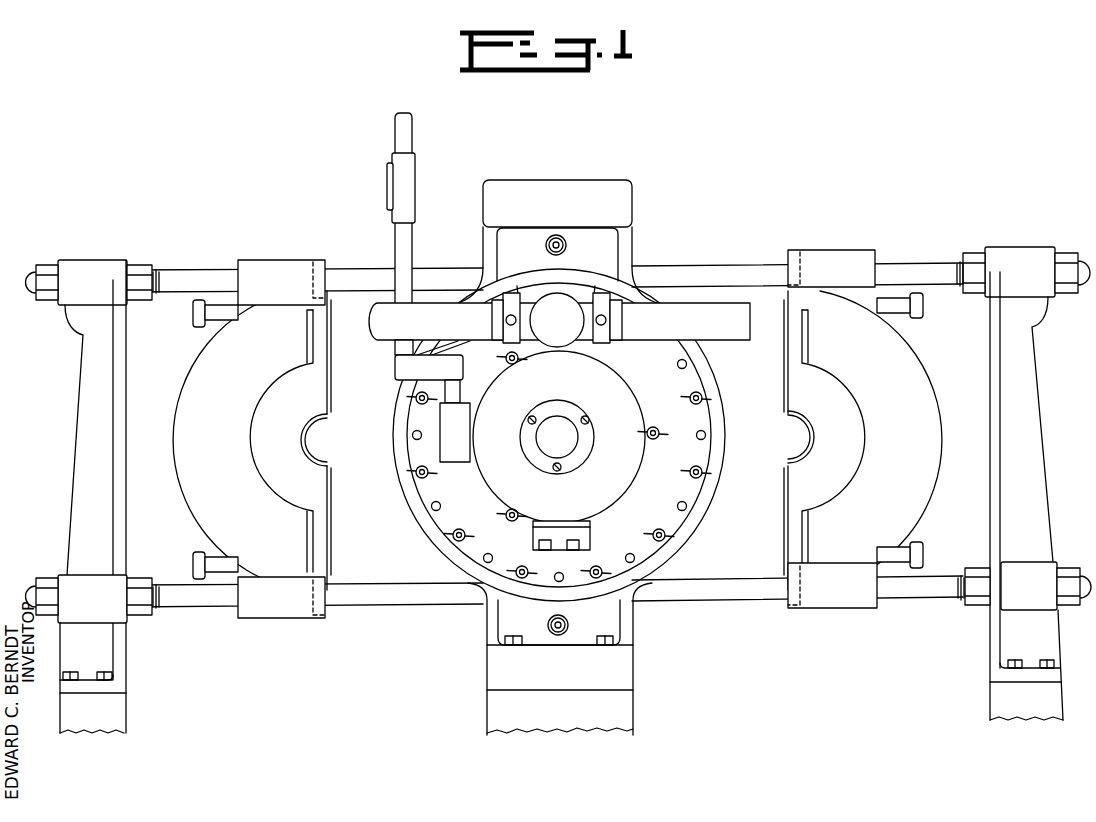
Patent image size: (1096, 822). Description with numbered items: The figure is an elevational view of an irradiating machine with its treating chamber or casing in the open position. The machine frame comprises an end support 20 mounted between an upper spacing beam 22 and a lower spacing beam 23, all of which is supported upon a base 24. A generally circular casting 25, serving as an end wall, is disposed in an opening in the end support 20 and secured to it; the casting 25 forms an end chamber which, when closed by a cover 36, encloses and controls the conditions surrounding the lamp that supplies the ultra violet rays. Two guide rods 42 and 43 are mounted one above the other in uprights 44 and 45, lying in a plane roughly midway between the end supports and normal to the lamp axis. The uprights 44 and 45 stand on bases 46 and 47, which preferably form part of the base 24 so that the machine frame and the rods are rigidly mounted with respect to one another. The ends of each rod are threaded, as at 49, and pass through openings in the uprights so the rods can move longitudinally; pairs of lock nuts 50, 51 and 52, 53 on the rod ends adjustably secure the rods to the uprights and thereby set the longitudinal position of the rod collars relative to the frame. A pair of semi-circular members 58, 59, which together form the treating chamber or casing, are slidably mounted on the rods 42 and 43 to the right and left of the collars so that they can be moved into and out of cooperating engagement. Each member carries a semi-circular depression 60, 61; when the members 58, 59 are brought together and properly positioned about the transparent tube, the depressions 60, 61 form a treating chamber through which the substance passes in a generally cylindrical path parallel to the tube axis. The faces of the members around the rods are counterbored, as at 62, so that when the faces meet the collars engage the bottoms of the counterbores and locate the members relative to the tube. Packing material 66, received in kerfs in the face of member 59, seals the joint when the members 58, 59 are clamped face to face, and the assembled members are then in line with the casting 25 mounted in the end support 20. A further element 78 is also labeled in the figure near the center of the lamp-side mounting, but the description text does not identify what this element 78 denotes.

The end support 20 is at (632, 248).
The upper spacing beam 22 is at (532, 188).
The lower spacing beam 23 is at (492, 677).
The base 24 is at (492, 718).
The casting 25 is at (672, 384).
The cover 36 is at (626, 474).
The guide rod 42 is at (367, 270).
The guide rod 43 is at (733, 600).
The upright 44 is at (88, 445).
The upright 45 is at (1030, 440).
The base 46 is at (120, 713).
The base 47 is at (998, 708).
The threaded end 49 is at (154, 272).
The lock nut 50 is at (50, 264).
The lock nut 51 is at (143, 264).
The lock nut 52 is at (975, 254).
The lock nut 53 is at (1060, 254).
The semi-circular member 58 is at (906, 358).
The semi-circular member 59 is at (200, 366).
The semi-circular depression 60 is at (800, 438).
The semi-circular depression 61 is at (314, 446).
The counterbore 62 is at (316, 262).
The packing material 66 is at (786, 347).
The shaft collar 78 is at (549, 302).